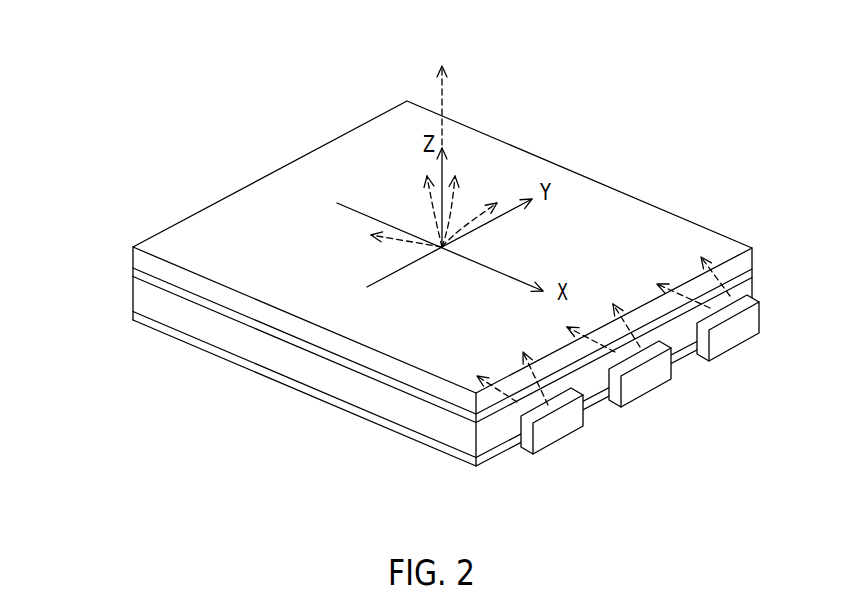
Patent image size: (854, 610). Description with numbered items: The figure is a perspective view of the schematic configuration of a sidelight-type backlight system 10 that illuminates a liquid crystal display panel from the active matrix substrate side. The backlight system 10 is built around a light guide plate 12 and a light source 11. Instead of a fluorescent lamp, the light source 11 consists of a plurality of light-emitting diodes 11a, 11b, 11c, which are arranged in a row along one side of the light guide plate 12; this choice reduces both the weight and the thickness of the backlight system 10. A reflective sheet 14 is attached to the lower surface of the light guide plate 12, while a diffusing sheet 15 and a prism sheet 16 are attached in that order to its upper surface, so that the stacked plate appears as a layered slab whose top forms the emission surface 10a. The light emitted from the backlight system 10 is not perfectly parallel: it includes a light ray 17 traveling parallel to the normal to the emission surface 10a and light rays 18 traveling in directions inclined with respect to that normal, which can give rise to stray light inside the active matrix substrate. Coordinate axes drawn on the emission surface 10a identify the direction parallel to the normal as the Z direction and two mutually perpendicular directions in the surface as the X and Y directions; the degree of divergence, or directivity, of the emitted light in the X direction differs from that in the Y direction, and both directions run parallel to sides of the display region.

The backlight system 10 is at (412, 276).
The emission surface 10a is at (675, 233).
The light source 11 is at (667, 408).
The light-emitting diode 11a is at (553, 432).
The light-emitting diode 11b is at (642, 387).
The light-emitting diode 11c is at (743, 342).
The light guide plate 12 is at (290, 363).
The reflective sheet 14 is at (324, 393).
The diffusing sheet 15 is at (133, 271).
The prism sheet 16 is at (134, 263).
The light ray 17 is at (445, 100).
The light ray 18 is at (480, 213).